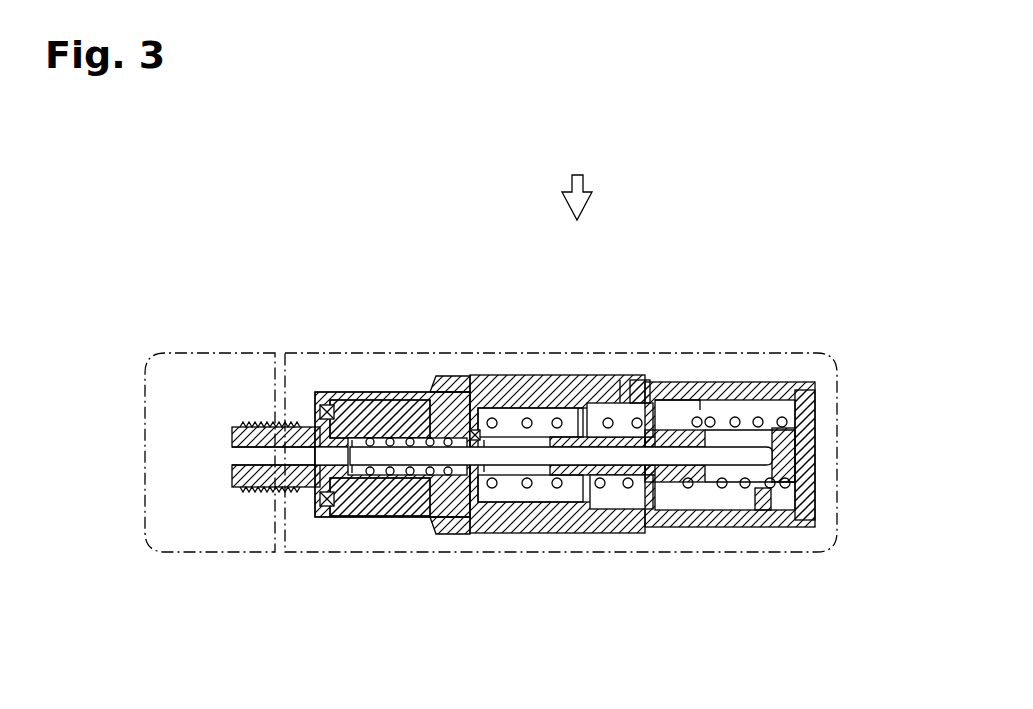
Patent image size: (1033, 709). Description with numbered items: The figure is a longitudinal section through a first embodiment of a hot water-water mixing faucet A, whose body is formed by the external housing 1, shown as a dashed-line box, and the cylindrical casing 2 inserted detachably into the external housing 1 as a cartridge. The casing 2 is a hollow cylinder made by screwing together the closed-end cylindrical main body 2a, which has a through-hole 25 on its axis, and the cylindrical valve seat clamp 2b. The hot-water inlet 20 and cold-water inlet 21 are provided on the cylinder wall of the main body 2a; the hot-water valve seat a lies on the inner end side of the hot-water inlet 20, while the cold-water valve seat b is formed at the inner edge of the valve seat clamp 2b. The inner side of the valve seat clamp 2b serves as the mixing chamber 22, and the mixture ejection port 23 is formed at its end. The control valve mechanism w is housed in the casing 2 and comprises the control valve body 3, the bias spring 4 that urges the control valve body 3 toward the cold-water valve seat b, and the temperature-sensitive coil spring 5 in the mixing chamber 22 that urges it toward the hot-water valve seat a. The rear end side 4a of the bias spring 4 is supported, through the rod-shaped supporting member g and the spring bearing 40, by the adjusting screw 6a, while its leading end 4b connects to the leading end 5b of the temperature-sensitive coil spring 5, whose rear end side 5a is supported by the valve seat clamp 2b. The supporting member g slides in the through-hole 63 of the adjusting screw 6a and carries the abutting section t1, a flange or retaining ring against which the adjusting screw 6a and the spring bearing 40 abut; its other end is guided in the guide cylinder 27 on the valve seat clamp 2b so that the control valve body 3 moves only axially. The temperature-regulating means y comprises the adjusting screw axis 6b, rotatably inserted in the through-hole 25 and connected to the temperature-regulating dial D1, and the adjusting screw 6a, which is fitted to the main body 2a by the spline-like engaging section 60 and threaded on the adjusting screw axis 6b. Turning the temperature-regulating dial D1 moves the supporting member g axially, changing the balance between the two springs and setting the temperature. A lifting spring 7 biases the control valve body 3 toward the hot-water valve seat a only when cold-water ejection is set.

The external housing 1 is at (388, 352).
The casing 2 is at (442, 403).
The main body 2a is at (357, 515).
The valve seat clamp 2b is at (788, 512).
The control valve body 3 is at (625, 485).
The bias spring 4 is at (520, 490).
The rear end side of the bias spring 4a is at (575, 408).
The leading end of the bias spring 4b is at (553, 437).
The temperature-sensitive coil spring 5 is at (720, 493).
The rear end side of the temperature-sensitive coil spring 5a is at (803, 418).
The leading end of the temperature-sensitive coil spring 5b is at (695, 493).
The adjusting screw 6a is at (425, 505).
The adjusting screw axis 6b is at (255, 435).
The lifting spring 7 is at (355, 437).
The hot-water inlet 20 is at (597, 403).
The cold-water inlet 21 is at (647, 393).
The mixing chamber 22 is at (760, 492).
The mixture ejection port 23 is at (805, 413).
The through-hole 25 is at (318, 405).
The guide cylinder 27 is at (780, 430).
The spring bearing 40 is at (482, 497).
The spline-like engaging section 60 is at (420, 420).
The through-hole 63 is at (478, 437).
The hot-water valve seat a is at (580, 408).
The cold-water valve seat b is at (703, 395).
The supporting member g is at (451, 442).
The control valve mechanism w is at (624, 385).
The temperature-regulating means y is at (330, 505).
The abutting section t1 is at (488, 445).
The temperature-regulating dial D1 is at (143, 503).
The hot water-water mixing faucet A is at (577, 178).